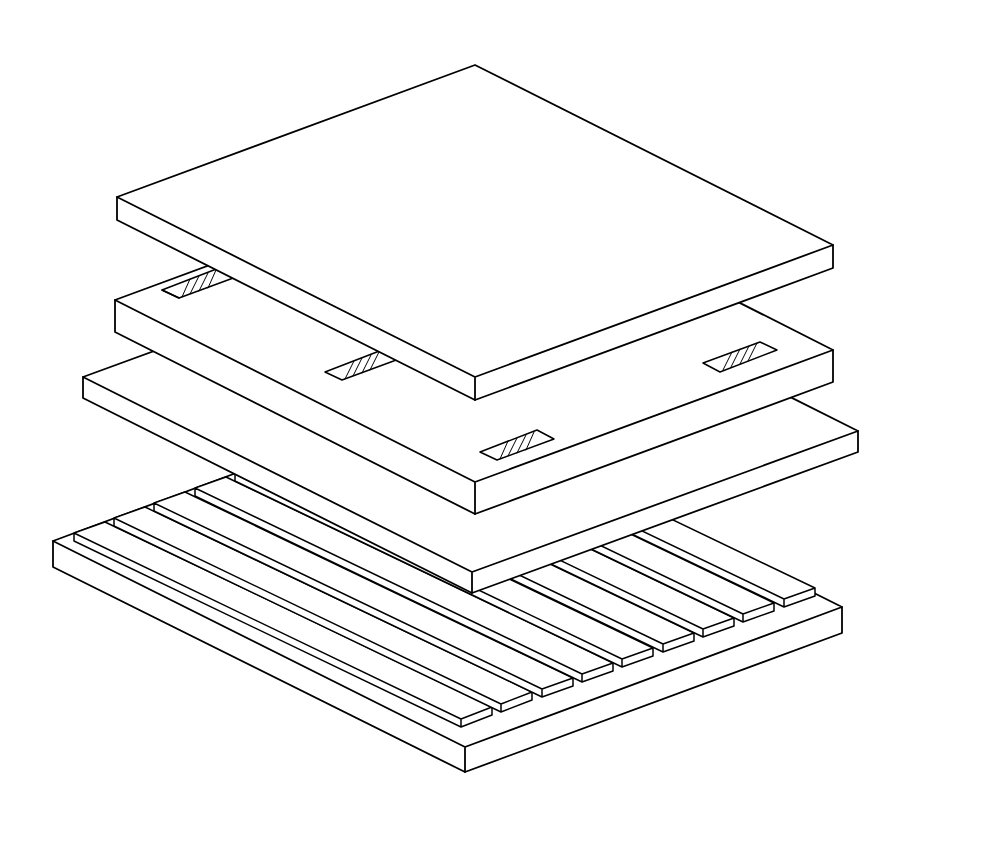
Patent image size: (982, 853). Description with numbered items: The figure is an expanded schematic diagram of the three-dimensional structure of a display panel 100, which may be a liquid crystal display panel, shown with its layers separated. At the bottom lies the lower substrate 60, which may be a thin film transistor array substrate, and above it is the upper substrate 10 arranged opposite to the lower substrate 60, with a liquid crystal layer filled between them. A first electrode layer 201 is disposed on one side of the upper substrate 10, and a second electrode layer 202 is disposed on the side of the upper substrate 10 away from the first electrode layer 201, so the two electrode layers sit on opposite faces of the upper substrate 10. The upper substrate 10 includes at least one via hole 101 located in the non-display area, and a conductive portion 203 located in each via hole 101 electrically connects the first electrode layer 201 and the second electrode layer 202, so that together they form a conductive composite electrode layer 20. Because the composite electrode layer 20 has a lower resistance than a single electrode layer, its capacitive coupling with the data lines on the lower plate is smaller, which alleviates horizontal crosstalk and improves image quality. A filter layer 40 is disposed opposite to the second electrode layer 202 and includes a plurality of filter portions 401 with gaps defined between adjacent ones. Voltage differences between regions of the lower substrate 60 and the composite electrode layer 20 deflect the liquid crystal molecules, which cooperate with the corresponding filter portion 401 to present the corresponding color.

The display panel 100 is at (113, 79).
The upper substrate 10 is at (128, 322).
The via hole 101 is at (164, 291).
The conductive portion 203 is at (200, 278).
The composite electrode layer 20 is at (499, 329).
The first electrode layer 201 is at (889, 392).
The second electrode layer 202 is at (810, 421).
The filter layer 40 is at (468, 564).
The filter portion 401 is at (712, 555).
The lower substrate 60 is at (778, 650).